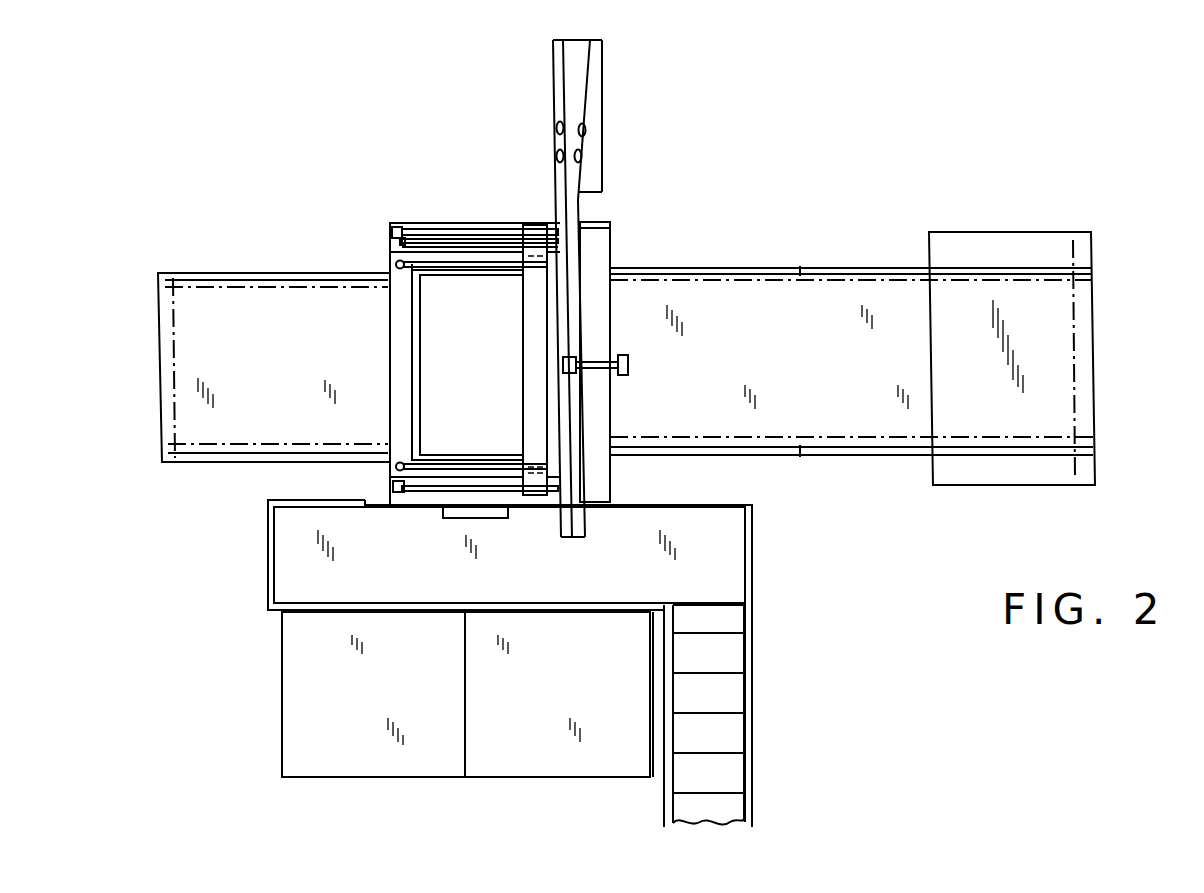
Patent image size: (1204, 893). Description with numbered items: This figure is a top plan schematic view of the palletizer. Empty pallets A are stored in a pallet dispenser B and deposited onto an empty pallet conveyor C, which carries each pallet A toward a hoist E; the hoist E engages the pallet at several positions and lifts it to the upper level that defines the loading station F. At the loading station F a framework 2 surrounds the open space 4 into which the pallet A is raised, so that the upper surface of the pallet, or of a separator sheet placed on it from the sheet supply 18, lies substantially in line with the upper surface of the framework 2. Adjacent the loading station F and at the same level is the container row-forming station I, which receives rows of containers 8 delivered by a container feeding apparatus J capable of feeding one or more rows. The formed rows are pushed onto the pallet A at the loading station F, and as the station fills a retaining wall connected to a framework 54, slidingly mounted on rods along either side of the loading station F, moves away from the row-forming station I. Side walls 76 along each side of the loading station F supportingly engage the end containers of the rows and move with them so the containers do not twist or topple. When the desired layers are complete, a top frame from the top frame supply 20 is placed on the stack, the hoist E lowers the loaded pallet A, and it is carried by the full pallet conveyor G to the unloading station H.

The framework 2 is at (388, 257).
The open space 4 is at (485, 270).
The containers 8 is at (562, 127).
The sheet supply 18 is at (380, 707).
The top frame supply 20 is at (572, 705).
The framework 54 is at (544, 409).
The side walls 76 is at (461, 278).
The pallet A is at (476, 380).
The pallet dispenser B is at (997, 226).
The empty pallet conveyor C is at (804, 350).
The hoist E is at (384, 479).
The loading station F is at (435, 300).
The full pallet conveyor G is at (295, 355).
The unloading station H is at (206, 268).
The container row-forming station I is at (560, 240).
The container feeding apparatus J is at (548, 88).